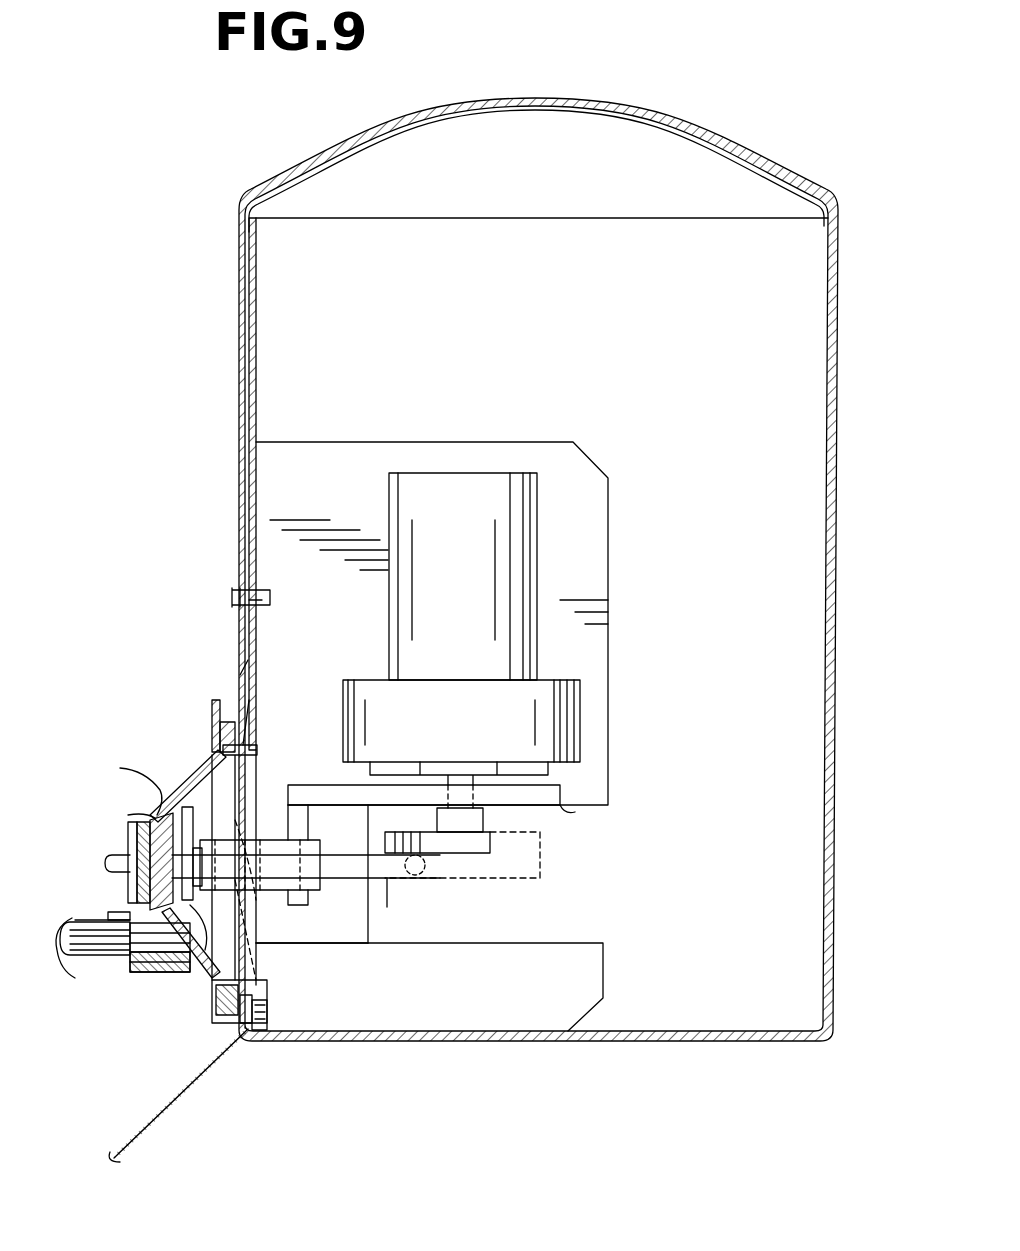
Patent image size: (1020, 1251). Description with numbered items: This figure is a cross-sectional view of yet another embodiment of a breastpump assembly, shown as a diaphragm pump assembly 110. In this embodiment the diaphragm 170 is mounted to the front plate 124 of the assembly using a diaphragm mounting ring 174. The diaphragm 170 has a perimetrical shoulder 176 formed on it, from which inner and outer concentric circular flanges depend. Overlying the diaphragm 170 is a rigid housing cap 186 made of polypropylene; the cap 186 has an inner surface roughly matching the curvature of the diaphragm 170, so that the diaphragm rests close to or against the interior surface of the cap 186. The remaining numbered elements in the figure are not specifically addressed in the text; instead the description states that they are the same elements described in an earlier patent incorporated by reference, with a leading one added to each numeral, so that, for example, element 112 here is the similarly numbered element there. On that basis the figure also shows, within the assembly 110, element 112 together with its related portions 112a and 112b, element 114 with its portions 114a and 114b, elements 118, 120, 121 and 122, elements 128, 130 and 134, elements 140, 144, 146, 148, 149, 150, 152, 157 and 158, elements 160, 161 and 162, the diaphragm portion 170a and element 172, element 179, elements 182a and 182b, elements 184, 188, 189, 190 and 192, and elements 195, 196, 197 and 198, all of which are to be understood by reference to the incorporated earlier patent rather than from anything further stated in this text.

The pump assembly 110 is at (130, 742).
The housing body 112 is at (366, 440).
The housing side wall 112a is at (260, 672).
The housing plate 112b is at (608, 790).
The outer shell 114 is at (836, 752).
The shell top wall 114a is at (252, 312).
The shell side wall 114b is at (262, 614).
The inlet conduit 118 is at (86, 966).
The conduit fitting 120 is at (150, 975).
The conduit flange 121 is at (108, 916).
The supply tube 122 is at (180, 1108).
The front plate 124 is at (249, 645).
The motor 128 is at (540, 512).
The liner 130 is at (242, 344).
The fastener 134 is at (255, 596).
The mounting bracket 140 is at (557, 800).
The coupling block 144 is at (478, 815).
The support bracket 146 is at (310, 826).
The drive shaft 148 is at (322, 895).
The bearing 149 is at (250, 835).
The support wall 150 is at (394, 902).
The coupling 152 is at (510, 850).
The pin 157 is at (405, 830).
The pivot 158 is at (428, 875).
The diaphragm plate 160 is at (152, 812).
The backing plate 161 is at (197, 848).
The link 162 is at (270, 897).
The diaphragm 170 is at (190, 770).
The diaphragm flange 170a is at (140, 770).
The diaphragm lip 172 is at (197, 927).
The diaphragm mounting ring 174 is at (258, 775).
The perimetrical shoulder 176 is at (212, 980).
The base plate 179 is at (318, 958).
The upper seal 182a is at (262, 705).
The lower seal 182b is at (262, 980).
The bolt 184 is at (240, 668).
The rigid housing cap 186 is at (140, 812).
The lower clamp 188 is at (220, 735).
The clamp block 189 is at (215, 998).
The upper clamp 190 is at (212, 708).
The clamp nut 192 is at (240, 1010).
The piston plate 195 is at (137, 845).
The piston hub 196 is at (137, 880).
The piston face 197 is at (128, 826).
The piston stud 198 is at (108, 862).